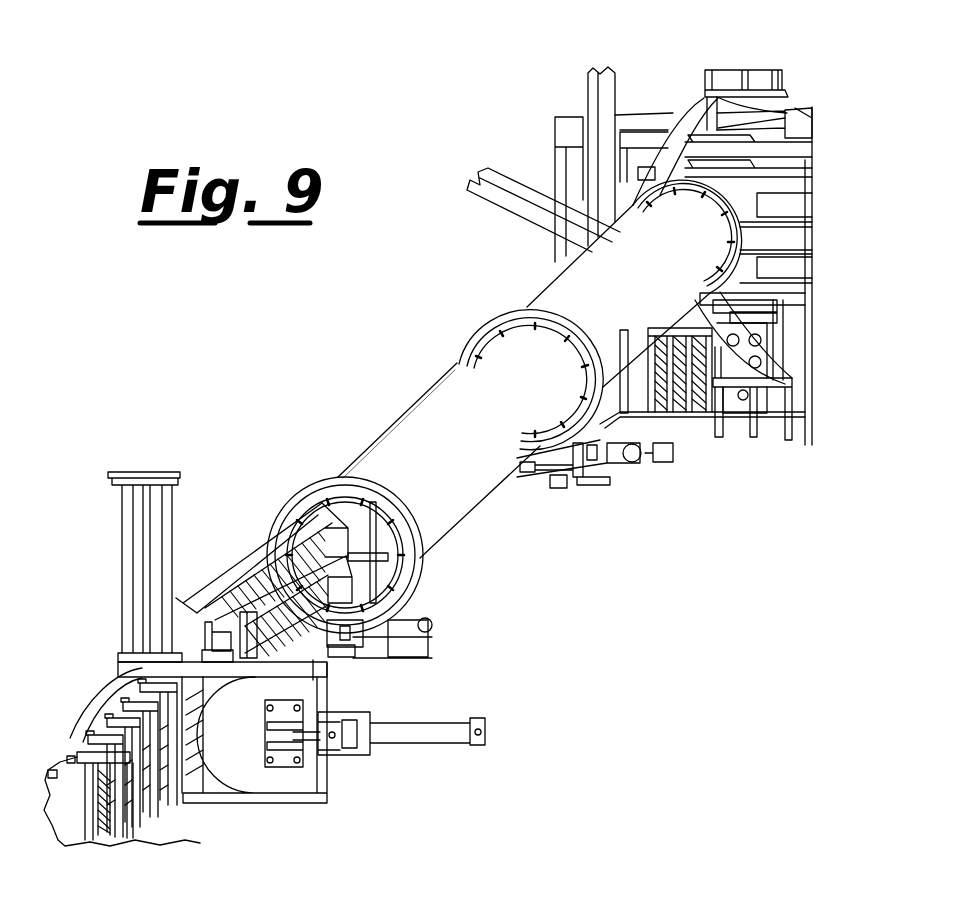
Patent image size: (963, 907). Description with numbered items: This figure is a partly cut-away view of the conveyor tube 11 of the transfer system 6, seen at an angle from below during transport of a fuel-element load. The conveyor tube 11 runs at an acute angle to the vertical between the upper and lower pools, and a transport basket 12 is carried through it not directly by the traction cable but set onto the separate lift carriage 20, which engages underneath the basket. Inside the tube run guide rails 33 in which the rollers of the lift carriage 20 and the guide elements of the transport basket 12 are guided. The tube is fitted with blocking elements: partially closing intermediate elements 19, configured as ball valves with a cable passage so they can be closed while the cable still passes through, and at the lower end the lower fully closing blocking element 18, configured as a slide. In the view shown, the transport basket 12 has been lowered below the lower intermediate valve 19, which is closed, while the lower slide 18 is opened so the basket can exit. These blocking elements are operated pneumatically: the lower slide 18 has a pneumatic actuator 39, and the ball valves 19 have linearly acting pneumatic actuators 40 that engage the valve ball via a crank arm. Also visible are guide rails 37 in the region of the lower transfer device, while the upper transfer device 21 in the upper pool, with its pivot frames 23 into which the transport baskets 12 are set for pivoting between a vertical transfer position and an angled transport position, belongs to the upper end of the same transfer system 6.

The transfer system 6 is at (477, 533).
The conveyor tube 11 is at (480, 490).
The transport basket 12 is at (285, 565).
The lower fully closing blocking element 18 is at (323, 773).
The partially closing intermediate element 19 is at (453, 353).
The lift carriage 20 is at (230, 620).
The upper transfer device 21 is at (760, 460).
The pivot frame 23 is at (182, 782).
The guide rails 33 is at (242, 585).
The guide rails 37 is at (73, 740).
The pneumatic actuator 39 is at (415, 718).
The linearly acting pneumatic actuator 40 is at (603, 493).